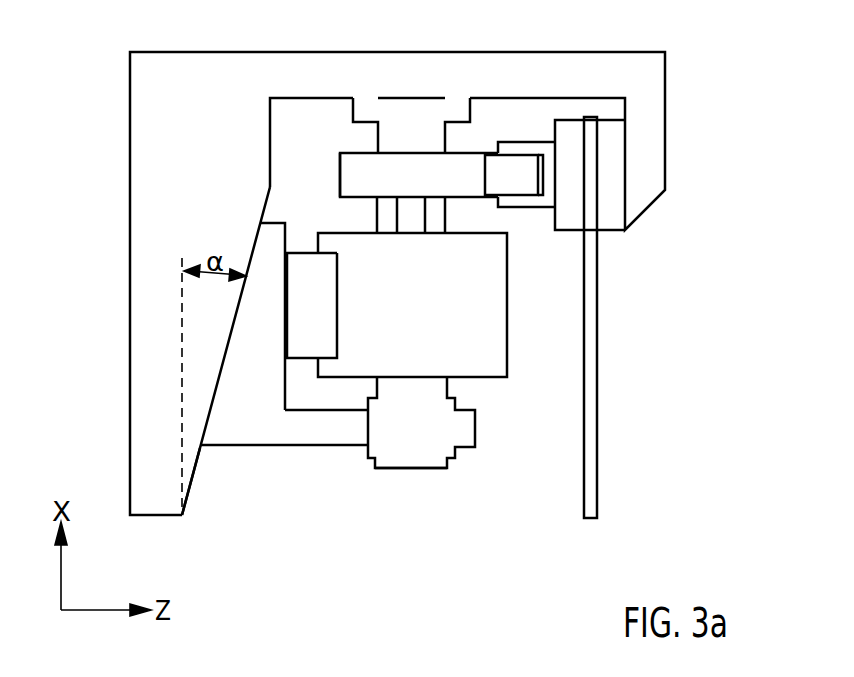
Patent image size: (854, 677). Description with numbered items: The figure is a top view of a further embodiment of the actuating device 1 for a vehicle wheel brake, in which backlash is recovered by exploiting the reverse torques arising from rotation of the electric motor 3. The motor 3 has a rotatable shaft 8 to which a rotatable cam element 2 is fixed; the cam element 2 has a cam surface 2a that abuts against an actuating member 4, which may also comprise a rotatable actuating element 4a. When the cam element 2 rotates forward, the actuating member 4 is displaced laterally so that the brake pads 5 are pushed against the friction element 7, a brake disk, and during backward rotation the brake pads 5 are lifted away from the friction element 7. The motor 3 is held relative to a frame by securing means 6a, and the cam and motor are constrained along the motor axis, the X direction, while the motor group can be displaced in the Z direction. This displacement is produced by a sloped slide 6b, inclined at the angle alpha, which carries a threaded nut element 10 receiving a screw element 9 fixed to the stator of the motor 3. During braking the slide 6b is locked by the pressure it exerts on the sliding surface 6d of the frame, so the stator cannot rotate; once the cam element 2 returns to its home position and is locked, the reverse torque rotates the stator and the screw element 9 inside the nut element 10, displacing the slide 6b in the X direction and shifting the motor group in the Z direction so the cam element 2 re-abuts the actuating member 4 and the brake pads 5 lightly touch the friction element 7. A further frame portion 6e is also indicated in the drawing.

The actuating device 1 is at (94, 43).
The rotatable cam element 2 is at (403, 153).
The cam surface 2a is at (348, 164).
The electric motor 3 is at (490, 380).
The actuating member 4 is at (537, 210).
The rotatable actuating element 4a is at (513, 170).
The brake pads 5 is at (575, 150).
The securing means 6a is at (445, 132).
The slide 6b is at (230, 432).
The surface of the frame 6d is at (272, 257).
The housing wall portion 6e is at (197, 430).
The friction element 7 is at (597, 497).
The rotatable shaft 8 is at (410, 216).
The screw element 9 is at (383, 487).
The nut element 10 is at (418, 450).